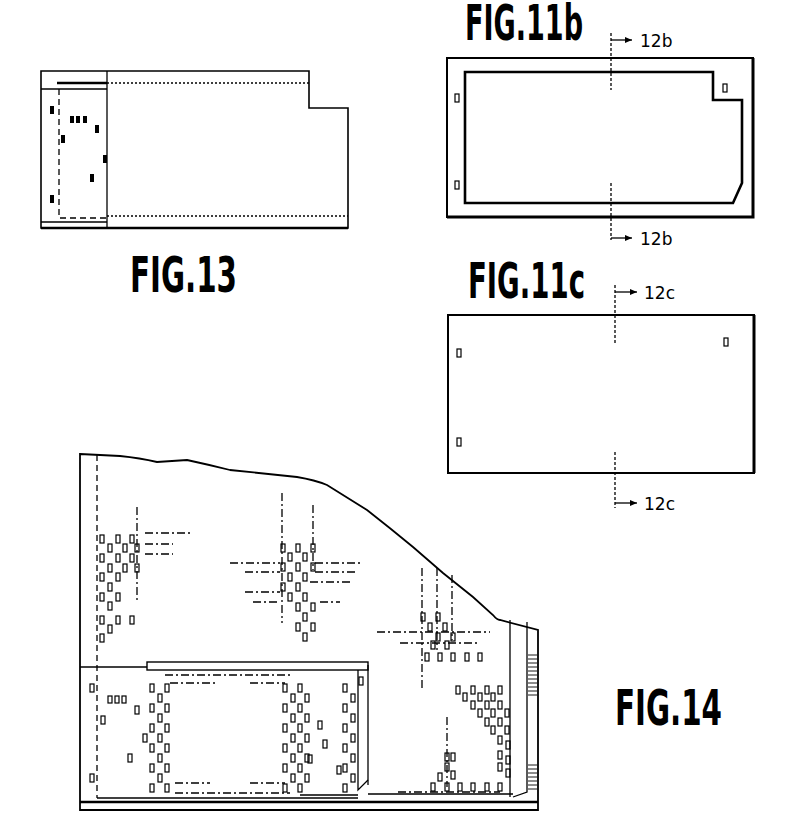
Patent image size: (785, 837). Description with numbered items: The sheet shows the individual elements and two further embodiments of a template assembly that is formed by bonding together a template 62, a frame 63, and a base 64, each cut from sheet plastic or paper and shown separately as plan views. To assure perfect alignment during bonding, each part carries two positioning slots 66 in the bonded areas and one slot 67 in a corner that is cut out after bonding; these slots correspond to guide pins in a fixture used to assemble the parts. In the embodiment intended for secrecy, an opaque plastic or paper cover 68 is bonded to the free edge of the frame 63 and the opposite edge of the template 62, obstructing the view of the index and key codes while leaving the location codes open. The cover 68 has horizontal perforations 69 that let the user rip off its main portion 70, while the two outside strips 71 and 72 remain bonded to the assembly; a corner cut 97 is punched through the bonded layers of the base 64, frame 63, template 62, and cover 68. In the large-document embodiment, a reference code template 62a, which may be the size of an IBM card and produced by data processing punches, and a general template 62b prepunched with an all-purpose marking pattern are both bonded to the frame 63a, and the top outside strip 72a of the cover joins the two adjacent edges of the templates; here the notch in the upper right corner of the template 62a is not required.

In FIG. 13, the template 62 is at (44, 142).
In FIG. 14, the reference code template 62a is at (90, 737).
In FIG. 14, the general template 62b is at (88, 525).
In FIG. 13, the frame 63 is at (93, 69).
In FIG. 11b, the frame 63 is at (460, 218).
In FIG. 14, the frame 63a is at (538, 765).
In FIG. 11c, the base 64 is at (443, 363).
In FIG. 11b, the positioning slots 66 is at (461, 101).
In FIG. 11c, the positioning slots 66 is at (462, 352).
In FIG. 14, the positioning slots 66 is at (88, 690).
In FIG. 11b, the positioning slot 67 is at (725, 98).
In FIG. 11c, the positioning slot 67 is at (729, 348).
In FIG. 14, the positioning slot 67 is at (363, 683).
In FIG. 13, the cover 68 is at (253, 106).
In FIG. 13, the horizontal perforations 69 is at (297, 88).
In FIG. 13, the main portion 70 is at (317, 172).
In FIG. 13, the outside strip 71 is at (333, 225).
In FIG. 13, the outside strip 72 is at (308, 75).
In FIG. 14, the top outside strip 72a is at (325, 663).
In FIG. 13, the corner cut 97 is at (333, 98).